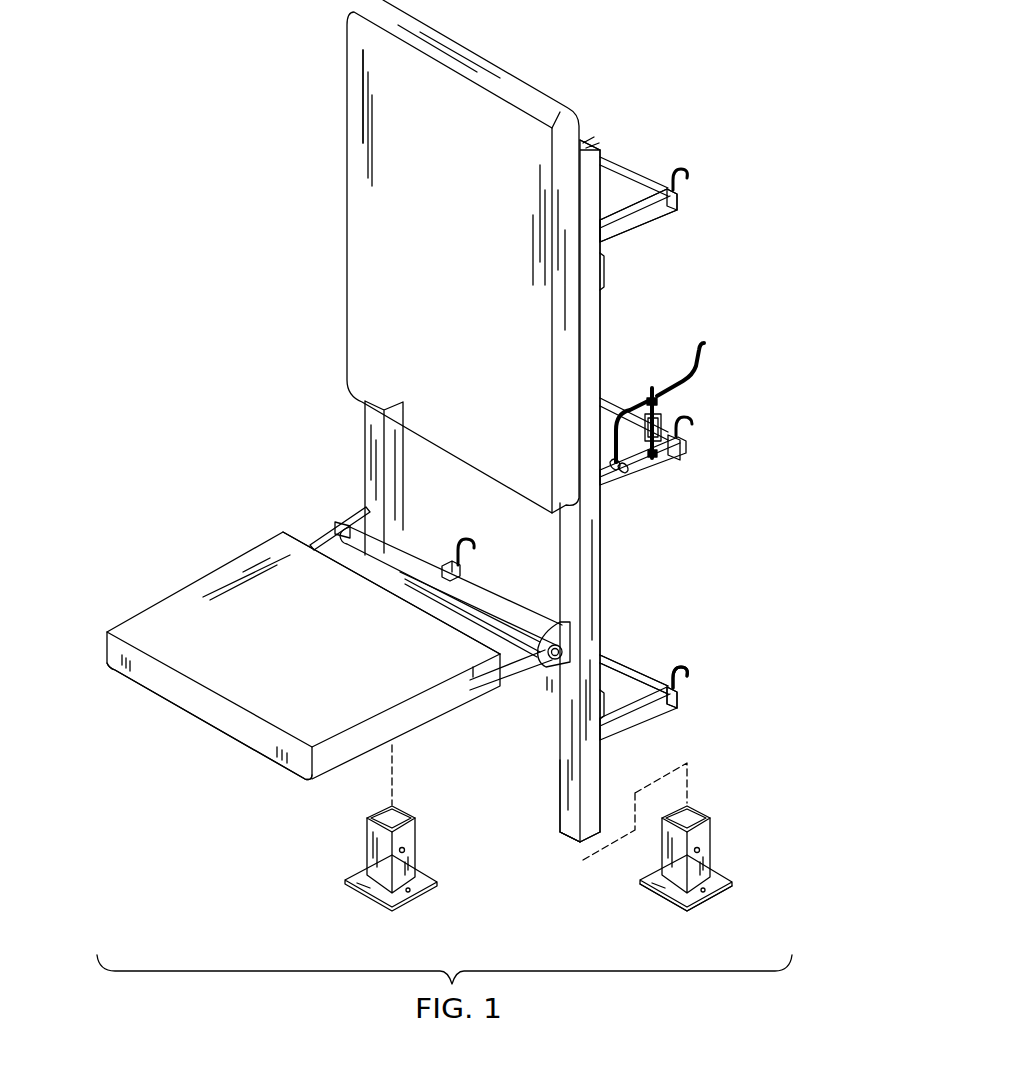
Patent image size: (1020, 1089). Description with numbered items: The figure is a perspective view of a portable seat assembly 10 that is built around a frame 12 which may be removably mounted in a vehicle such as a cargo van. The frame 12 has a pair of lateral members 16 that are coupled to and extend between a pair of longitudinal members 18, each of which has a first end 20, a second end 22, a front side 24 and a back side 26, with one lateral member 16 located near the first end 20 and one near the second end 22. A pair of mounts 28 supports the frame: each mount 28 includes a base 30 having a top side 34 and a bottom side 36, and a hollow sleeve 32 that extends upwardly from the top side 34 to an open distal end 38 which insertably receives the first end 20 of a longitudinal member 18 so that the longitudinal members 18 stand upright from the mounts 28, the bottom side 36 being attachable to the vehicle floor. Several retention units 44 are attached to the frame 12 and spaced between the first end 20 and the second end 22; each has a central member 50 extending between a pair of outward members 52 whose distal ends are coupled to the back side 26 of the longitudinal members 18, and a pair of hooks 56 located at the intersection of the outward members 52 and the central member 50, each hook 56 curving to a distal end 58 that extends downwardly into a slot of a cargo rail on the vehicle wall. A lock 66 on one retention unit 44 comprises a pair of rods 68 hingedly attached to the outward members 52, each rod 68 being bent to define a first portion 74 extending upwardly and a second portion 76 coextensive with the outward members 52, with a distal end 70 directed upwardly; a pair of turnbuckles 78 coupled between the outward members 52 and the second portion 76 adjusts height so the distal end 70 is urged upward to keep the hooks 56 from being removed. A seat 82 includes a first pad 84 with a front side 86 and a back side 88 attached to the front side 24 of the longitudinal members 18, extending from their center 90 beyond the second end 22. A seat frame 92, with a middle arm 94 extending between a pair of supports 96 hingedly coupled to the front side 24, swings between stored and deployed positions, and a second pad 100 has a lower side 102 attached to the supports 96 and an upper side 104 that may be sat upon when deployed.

The portable seat assembly 10 is at (232, 142).
The frame 12 is at (600, 150).
The lateral member 16 is at (606, 272).
The longitudinal member 18 is at (366, 436).
The first end 20 is at (562, 842).
The second end 22 is at (584, 133).
The front side 24 is at (566, 782).
The back side 26 is at (600, 788).
The mount 28 is at (428, 902).
The base 30 is at (735, 880).
The sleeve 32 is at (712, 840).
The top side 34 is at (665, 893).
The bottom side 36 is at (706, 898).
The distal end 38 is at (698, 810).
The retention unit 44 is at (694, 206).
The central member 50 is at (626, 668).
The outward member 52 is at (440, 568).
The hook 56 is at (458, 546).
The distal end 58 is at (688, 664).
The lock 66 is at (652, 370).
The rod 68 is at (618, 420).
The distal end 70 is at (698, 372).
The first portion 74 is at (634, 452).
The second portion 76 is at (676, 386).
The turnbuckle 78 is at (666, 428).
The seat 82 is at (214, 524).
The first pad 84 is at (360, 218).
The front side 86 is at (368, 152).
The back side 88 is at (600, 228).
The center 90 is at (560, 534).
The seat frame 92 is at (308, 522).
The middle arm 94 is at (494, 612).
The support 96 is at (330, 522).
The second pad 100 is at (152, 620).
The lower side 102 is at (286, 770).
The upper side 104 is at (192, 590).